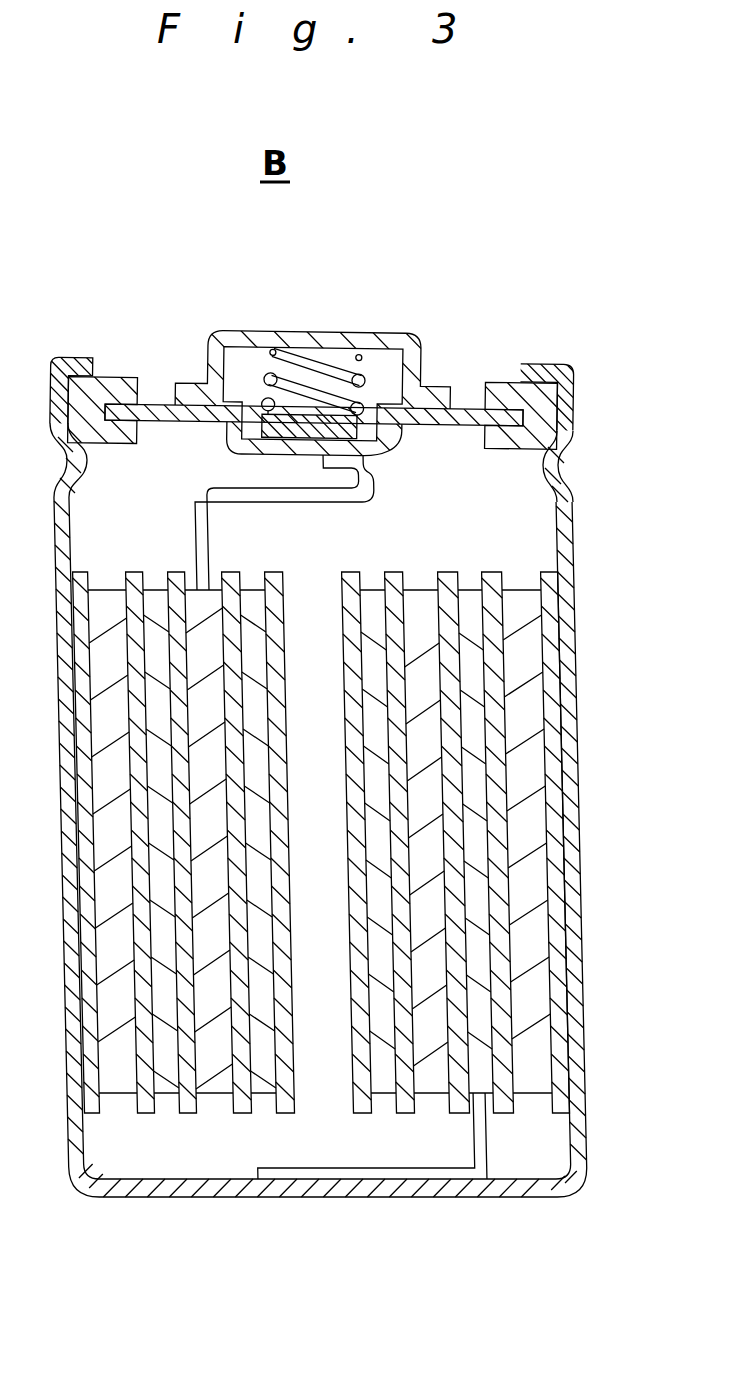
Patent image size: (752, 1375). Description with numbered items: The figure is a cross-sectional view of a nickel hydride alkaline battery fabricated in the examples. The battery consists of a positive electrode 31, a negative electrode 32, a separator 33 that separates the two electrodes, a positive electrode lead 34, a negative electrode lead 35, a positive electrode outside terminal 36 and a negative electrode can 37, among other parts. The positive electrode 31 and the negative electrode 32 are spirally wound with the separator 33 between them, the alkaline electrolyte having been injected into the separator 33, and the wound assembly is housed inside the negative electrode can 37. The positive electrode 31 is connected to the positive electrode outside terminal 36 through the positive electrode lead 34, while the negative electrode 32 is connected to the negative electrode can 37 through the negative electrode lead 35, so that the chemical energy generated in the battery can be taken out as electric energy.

The positive electrode 31 is at (520, 742).
The negative electrode 32 is at (473, 912).
The separator 33 is at (492, 660).
The positive electrode lead 34 is at (199, 505).
The negative electrode lead 35 is at (316, 1179).
The positive electrode outside terminal 36 is at (377, 332).
The negative electrode can 37 is at (583, 1087).